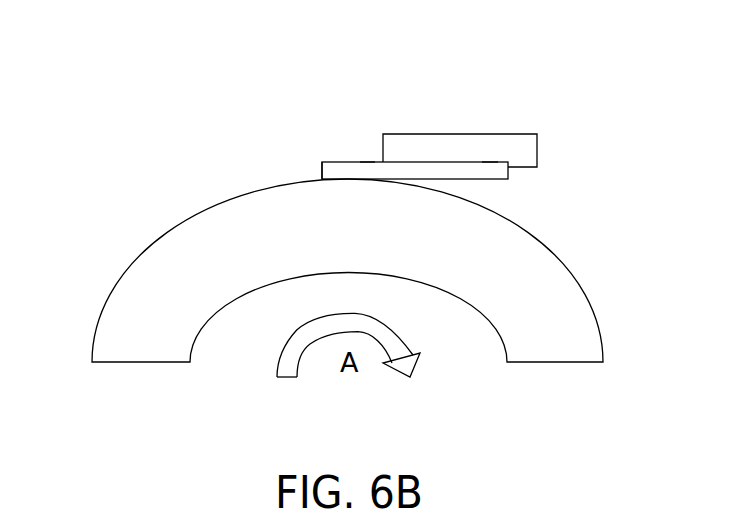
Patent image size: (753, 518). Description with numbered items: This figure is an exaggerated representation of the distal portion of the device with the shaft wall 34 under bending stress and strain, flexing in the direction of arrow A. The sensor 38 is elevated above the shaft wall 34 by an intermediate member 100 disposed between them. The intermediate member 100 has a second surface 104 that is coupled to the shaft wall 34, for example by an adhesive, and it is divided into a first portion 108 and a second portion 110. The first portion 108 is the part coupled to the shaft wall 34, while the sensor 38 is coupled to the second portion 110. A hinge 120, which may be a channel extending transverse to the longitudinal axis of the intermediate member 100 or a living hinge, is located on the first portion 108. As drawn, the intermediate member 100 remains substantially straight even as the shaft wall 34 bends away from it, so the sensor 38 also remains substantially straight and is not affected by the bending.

The shaft wall 34 is at (143, 283).
The sensor 38 is at (508, 134).
The intermediate member 100 is at (433, 126).
The second surface 104 is at (477, 179).
The first portion 108 is at (320, 157).
The second portion 110 is at (488, 158).
The hinge 120 is at (367, 157).